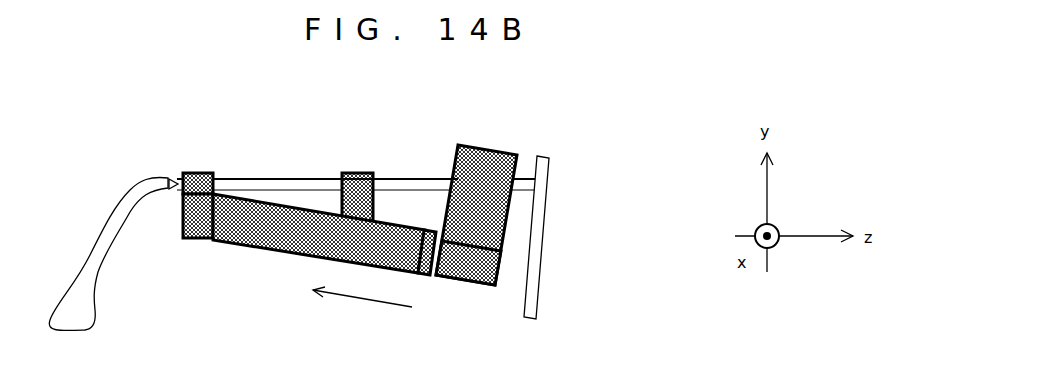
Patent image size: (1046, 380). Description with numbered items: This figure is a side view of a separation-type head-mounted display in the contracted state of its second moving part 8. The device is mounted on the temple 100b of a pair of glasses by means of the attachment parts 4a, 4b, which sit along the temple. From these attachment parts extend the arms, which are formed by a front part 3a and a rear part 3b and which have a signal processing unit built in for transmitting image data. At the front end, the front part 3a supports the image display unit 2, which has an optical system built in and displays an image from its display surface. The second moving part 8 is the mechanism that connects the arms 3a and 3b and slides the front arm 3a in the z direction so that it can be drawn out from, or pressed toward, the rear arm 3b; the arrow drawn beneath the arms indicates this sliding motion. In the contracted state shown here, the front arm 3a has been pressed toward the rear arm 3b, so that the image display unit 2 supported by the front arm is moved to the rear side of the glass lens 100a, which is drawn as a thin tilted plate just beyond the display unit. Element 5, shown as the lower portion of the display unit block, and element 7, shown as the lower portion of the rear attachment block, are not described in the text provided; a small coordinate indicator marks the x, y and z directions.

The image display unit 2 is at (483, 162).
The front part 3a is at (427, 262).
The rear part 3b is at (280, 233).
The attachment part 4a is at (362, 172).
The attachment part 4b is at (204, 171).
The coupling portion 5 is at (472, 270).
The attachment portion 7 is at (202, 215).
The second moving part 8 is at (362, 312).
The glass lens 100a is at (542, 247).
The temple 100b is at (410, 177).